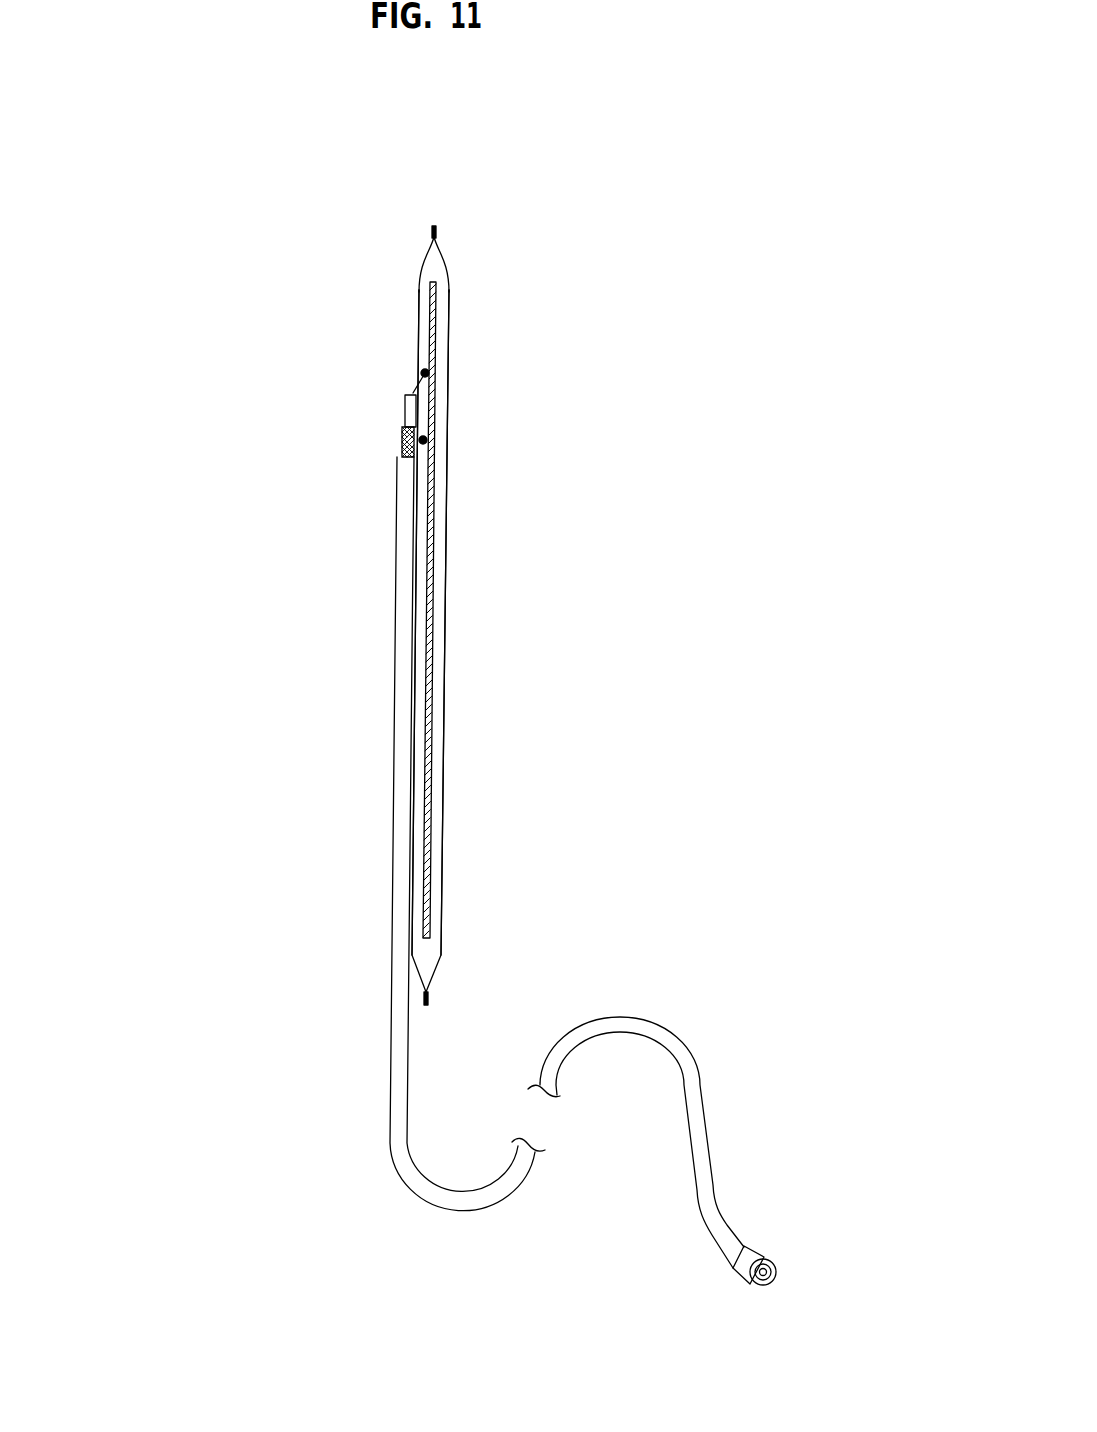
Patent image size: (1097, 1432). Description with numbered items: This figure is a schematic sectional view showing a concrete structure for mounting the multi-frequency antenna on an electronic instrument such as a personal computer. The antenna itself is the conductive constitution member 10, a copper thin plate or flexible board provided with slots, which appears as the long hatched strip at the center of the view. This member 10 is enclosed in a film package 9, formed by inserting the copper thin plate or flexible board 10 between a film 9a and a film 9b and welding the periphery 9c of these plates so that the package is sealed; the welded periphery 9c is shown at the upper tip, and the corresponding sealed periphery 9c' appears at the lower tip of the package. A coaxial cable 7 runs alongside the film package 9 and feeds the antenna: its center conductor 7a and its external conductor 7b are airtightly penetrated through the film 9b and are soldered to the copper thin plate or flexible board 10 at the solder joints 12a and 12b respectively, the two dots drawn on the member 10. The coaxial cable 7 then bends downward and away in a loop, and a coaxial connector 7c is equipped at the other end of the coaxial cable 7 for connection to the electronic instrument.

The coaxial cable 7 is at (420, 1206).
The center conductor 7a is at (415, 388).
The external conductor 7b is at (407, 440).
The coaxial connector 7c is at (767, 1285).
The film package 9 is at (462, 370).
The film 9a is at (453, 292).
The film 9b is at (417, 298).
The periphery 9c is at (355, 182).
The periphery 9c' is at (524, 944).
The conductive constitution member 10 is at (433, 633).
The solder 12a is at (425, 373).
The solder 12b is at (423, 440).